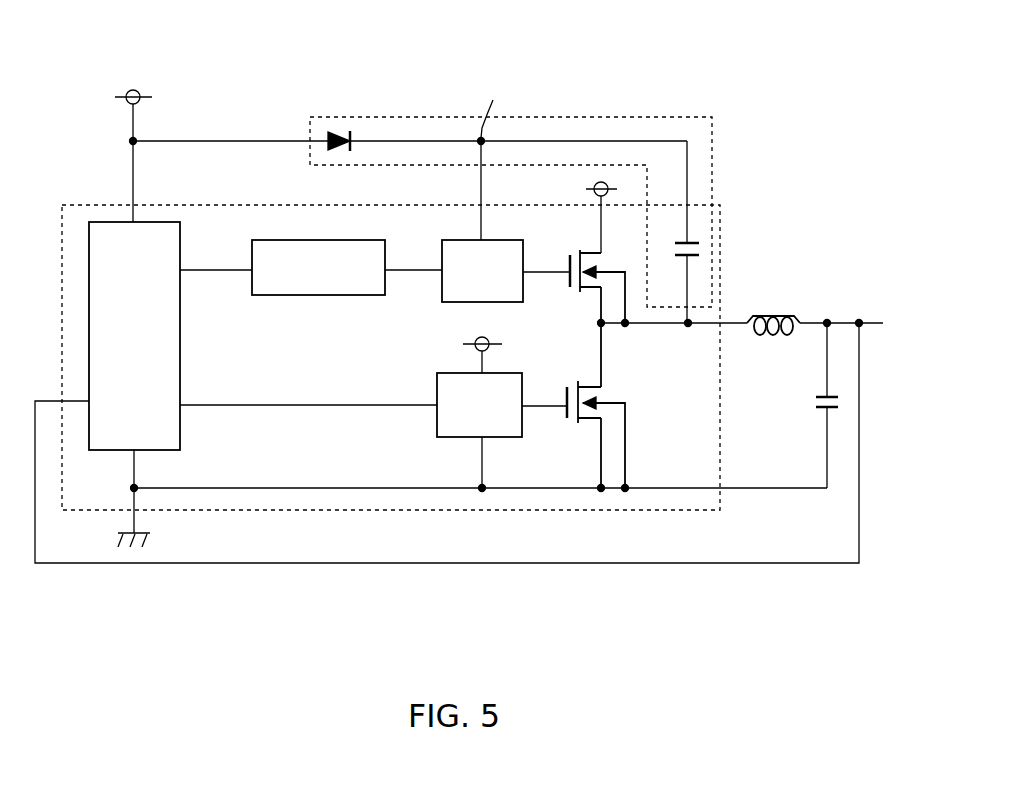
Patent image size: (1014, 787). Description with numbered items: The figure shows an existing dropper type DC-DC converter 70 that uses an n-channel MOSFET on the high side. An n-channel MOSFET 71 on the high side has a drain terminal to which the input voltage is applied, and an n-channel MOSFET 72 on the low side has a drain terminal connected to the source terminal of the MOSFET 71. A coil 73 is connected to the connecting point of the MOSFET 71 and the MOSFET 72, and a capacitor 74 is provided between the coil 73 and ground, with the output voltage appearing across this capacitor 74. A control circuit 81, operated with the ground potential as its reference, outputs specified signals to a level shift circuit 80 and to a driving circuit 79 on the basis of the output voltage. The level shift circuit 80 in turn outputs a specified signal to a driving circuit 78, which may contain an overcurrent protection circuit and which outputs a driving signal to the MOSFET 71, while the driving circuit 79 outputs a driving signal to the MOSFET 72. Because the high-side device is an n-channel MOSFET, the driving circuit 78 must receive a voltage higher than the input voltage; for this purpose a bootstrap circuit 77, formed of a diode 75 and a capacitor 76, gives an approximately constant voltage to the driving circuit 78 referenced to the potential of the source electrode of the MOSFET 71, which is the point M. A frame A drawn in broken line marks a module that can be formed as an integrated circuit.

The DC-DC converter 70 is at (748, 78).
The n-channel MOSFET 71 is at (592, 252).
The n-channel MOSFET 72 is at (590, 384).
The coil 73 is at (775, 338).
The capacitor 74 is at (822, 409).
The diode 75 is at (340, 133).
The capacitor 76 is at (681, 263).
The bootstrap circuit 77 is at (716, 155).
The driving circuit 78 is at (523, 293).
The driving circuit 79 is at (503, 373).
The level shift circuit 80 is at (318, 296).
The control circuit 81 is at (180, 343).
The frame A is at (724, 242).
The point M is at (688, 331).